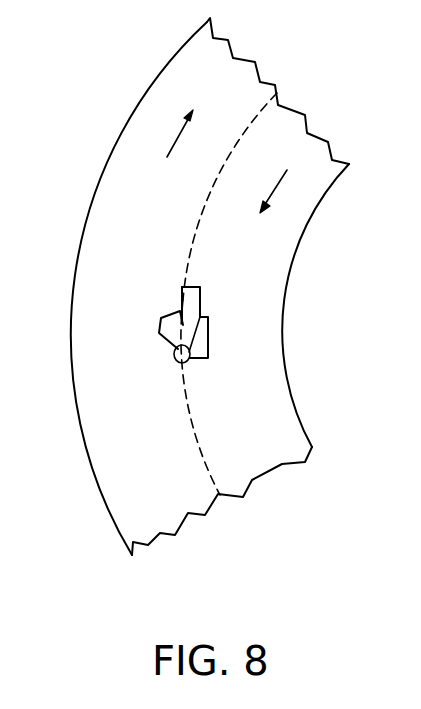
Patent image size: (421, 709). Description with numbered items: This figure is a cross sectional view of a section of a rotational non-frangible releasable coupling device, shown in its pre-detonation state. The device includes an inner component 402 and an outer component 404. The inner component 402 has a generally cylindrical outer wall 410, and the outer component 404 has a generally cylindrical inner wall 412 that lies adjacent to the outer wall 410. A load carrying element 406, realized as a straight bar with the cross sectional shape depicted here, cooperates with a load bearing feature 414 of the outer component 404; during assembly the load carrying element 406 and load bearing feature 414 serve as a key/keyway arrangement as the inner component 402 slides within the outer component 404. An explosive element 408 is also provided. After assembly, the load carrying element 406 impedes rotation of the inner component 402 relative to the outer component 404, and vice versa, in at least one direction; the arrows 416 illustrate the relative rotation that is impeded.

The inner component 402 is at (192, 286).
The outer component 404 is at (108, 207).
The load carrying element 406 is at (200, 302).
The explosive element 408 is at (163, 320).
The outer wall 410 is at (224, 296).
The inner wall 412 is at (212, 475).
The load bearing feature 414 is at (183, 362).
The arrows 416 is at (172, 146).